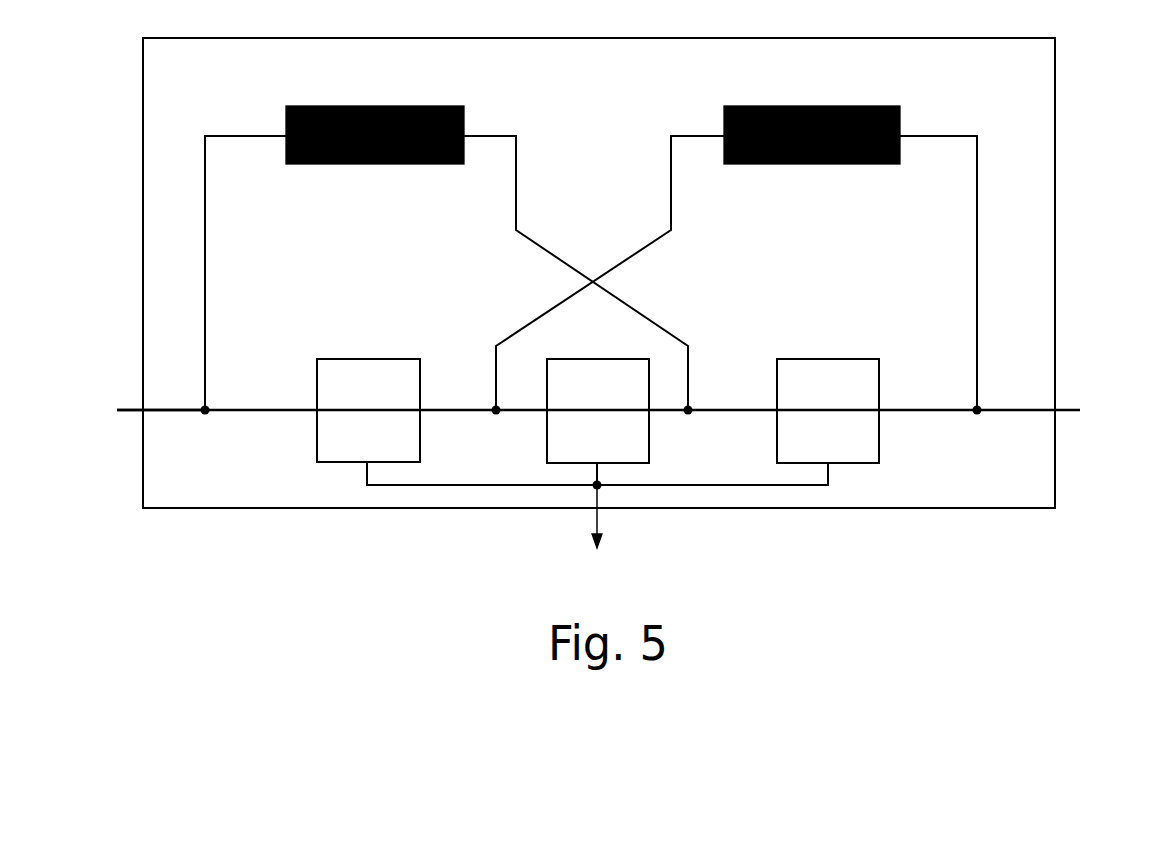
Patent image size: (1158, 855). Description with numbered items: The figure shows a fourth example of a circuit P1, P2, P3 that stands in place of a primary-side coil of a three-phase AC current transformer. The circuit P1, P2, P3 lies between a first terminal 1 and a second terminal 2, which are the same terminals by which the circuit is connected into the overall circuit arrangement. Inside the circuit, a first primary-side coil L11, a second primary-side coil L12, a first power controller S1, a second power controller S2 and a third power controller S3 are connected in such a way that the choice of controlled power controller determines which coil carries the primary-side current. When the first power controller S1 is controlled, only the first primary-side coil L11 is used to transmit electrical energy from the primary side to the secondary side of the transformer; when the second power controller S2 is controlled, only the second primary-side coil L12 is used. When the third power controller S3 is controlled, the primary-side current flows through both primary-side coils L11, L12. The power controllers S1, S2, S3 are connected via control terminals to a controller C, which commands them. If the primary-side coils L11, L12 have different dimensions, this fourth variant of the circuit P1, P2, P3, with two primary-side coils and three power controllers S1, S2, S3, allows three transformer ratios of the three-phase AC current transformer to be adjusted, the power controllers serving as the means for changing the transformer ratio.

The first terminal 1 is at (1055, 410).
The second terminal 2 is at (138, 412).
The circuit P1 is at (954, 508).
The circuit P2 is at (599, 273).
The circuit P3 is at (599, 273).
The first primary-side coil L11 is at (736, 242).
The second primary-side coil L12 is at (446, 242).
The first power controller S1 is at (458, 422).
The second power controller S2 is at (736, 422).
The third power controller S3 is at (598, 422).
The controller C is at (597, 534).